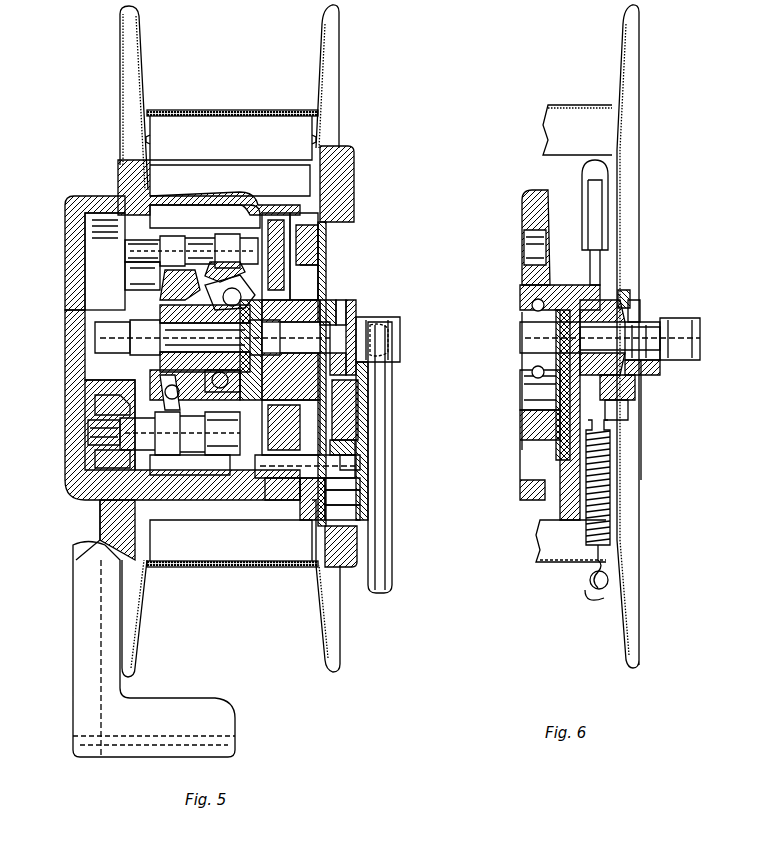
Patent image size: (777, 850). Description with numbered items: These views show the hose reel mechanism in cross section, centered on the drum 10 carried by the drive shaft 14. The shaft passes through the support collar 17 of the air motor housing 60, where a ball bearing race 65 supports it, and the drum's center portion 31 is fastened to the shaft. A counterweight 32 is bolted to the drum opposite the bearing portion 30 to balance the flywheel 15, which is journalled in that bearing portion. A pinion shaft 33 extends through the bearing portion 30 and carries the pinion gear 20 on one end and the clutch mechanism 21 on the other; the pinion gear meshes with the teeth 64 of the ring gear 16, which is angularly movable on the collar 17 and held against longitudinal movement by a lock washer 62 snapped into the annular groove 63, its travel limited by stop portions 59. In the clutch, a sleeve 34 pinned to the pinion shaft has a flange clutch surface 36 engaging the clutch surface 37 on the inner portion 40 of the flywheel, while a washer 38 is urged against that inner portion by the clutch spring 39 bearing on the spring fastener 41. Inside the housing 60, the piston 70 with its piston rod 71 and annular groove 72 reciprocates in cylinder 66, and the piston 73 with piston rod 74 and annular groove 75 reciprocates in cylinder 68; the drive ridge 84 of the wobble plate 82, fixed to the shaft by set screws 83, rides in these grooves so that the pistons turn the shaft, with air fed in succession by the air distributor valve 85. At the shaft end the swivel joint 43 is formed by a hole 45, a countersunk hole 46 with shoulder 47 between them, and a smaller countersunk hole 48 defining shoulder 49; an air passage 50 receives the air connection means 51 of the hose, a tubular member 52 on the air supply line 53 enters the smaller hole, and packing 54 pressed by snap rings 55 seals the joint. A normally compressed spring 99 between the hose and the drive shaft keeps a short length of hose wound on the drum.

In FIG. 5, the drum 10 is at (318, 52).
In FIG. 6, the drum 10 is at (628, 336).
In FIG. 5, the drive shaft 14 is at (292, 295).
In FIG. 5, the flywheel 15 is at (352, 570).
In FIG. 5, the ring gear 16 is at (263, 210).
In FIG. 6, the ring gear 16 is at (570, 462).
In FIG. 5, the support collar 17 is at (272, 398).
In FIG. 6, the support collar 17 is at (528, 392).
In FIG. 5, the pinion gear 20 is at (250, 518).
In FIG. 6, the pinion gear 20 is at (574, 333).
In FIG. 5, the clutch mechanism 21 is at (305, 480).
In FIG. 5, the bearing portion 30 is at (292, 522).
In FIG. 5, the center portion 31 is at (300, 268).
In FIG. 5, the counterweight 32 is at (347, 147).
In FIG. 5, the pinion shaft 33 is at (272, 490).
In FIG. 5, the sleeve 34 is at (355, 502).
In FIG. 5, the flange clutch surface 36 is at (315, 430).
In FIG. 5, the clutch surface 37 is at (345, 448).
In FIG. 5, the washer 38 is at (355, 515).
In FIG. 5, the clutch spring 39 is at (355, 490).
In FIG. 5, the inner portion 40 is at (316, 570).
In FIG. 5, the spring fastener 41 is at (360, 462).
In FIG. 5, the swivel joint 43 is at (400, 328).
In FIG. 6, the swivel joint 43 is at (700, 322).
In FIG. 5, the hole 45 is at (358, 305).
In FIG. 5, the countersunk hole 46 is at (338, 300).
In FIG. 5, the shoulder 47 is at (348, 302).
In FIG. 5, the smaller countersunk hole 48 is at (265, 380).
In FIG. 6, the smaller countersunk hole 48 is at (585, 380).
In FIG. 5, the shoulder 49 is at (368, 376).
In FIG. 6, the air passage 50 is at (634, 292).
In FIG. 6, the air connection means 51 is at (580, 212).
In FIG. 6, the tubular member 52 is at (642, 305).
In FIG. 5, the air supply line 53 is at (393, 402).
In FIG. 6, the air supply line 53 is at (662, 320).
In FIG. 6, the packing 54 is at (628, 390).
In FIG. 6, the snap rings 55 is at (650, 378).
In FIG. 5, the stop portions 59 is at (250, 425).
In FIG. 5, the housing 60 is at (190, 192).
In FIG. 6, the housing 60 is at (522, 219).
In FIG. 5, the lock washer 62 is at (275, 412).
In FIG. 5, the annular groove 63 is at (225, 408).
In FIG. 5, the teeth 64 is at (290, 216).
In FIG. 5, the ball bearing race 65 is at (221, 380).
In FIG. 6, the ball bearing race 65 is at (532, 374).
In FIG. 5, the cylinder 66 is at (80, 250).
In FIG. 5, the cylinder 68 is at (88, 430).
In FIG. 5, the piston 70 is at (118, 238).
In FIG. 5, the piston rod 71 is at (191, 251).
In FIG. 5, the annular groove 72 is at (215, 232).
In FIG. 5, the piston 73 is at (75, 398).
In FIG. 5, the piston rod 74 is at (132, 444).
In FIG. 5, the annular groove 75 is at (180, 450).
In FIG. 5, the wobble plate 82 is at (200, 292).
In FIG. 5, the set screws 83 is at (155, 300).
In FIG. 5, the drive ridge 84 is at (212, 272).
In FIG. 5, the air distributor valve 85 is at (95, 350).
In FIG. 6, the spring 99 is at (586, 506).